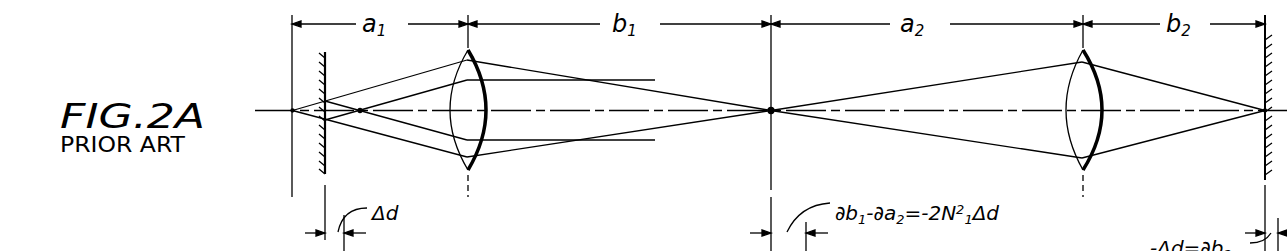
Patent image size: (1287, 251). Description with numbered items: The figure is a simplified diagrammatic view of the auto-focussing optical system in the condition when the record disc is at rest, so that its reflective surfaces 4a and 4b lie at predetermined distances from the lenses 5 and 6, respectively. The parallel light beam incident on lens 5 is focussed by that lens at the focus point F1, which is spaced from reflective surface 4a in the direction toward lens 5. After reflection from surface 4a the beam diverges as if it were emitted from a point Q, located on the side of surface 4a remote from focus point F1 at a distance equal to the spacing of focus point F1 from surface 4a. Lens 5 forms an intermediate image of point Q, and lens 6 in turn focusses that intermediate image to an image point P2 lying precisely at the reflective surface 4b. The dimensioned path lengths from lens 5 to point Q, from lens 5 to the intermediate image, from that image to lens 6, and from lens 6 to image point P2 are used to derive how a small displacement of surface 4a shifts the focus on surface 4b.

The reflective surface 4a is at (327, 152).
The reflective surface 4b is at (1265, 69).
The lens 5 is at (481, 150).
The lens 6 is at (1097, 134).
The virtual point Q is at (290, 109).
The focus point F1 is at (359, 106).
The image point P2 is at (1261, 114).